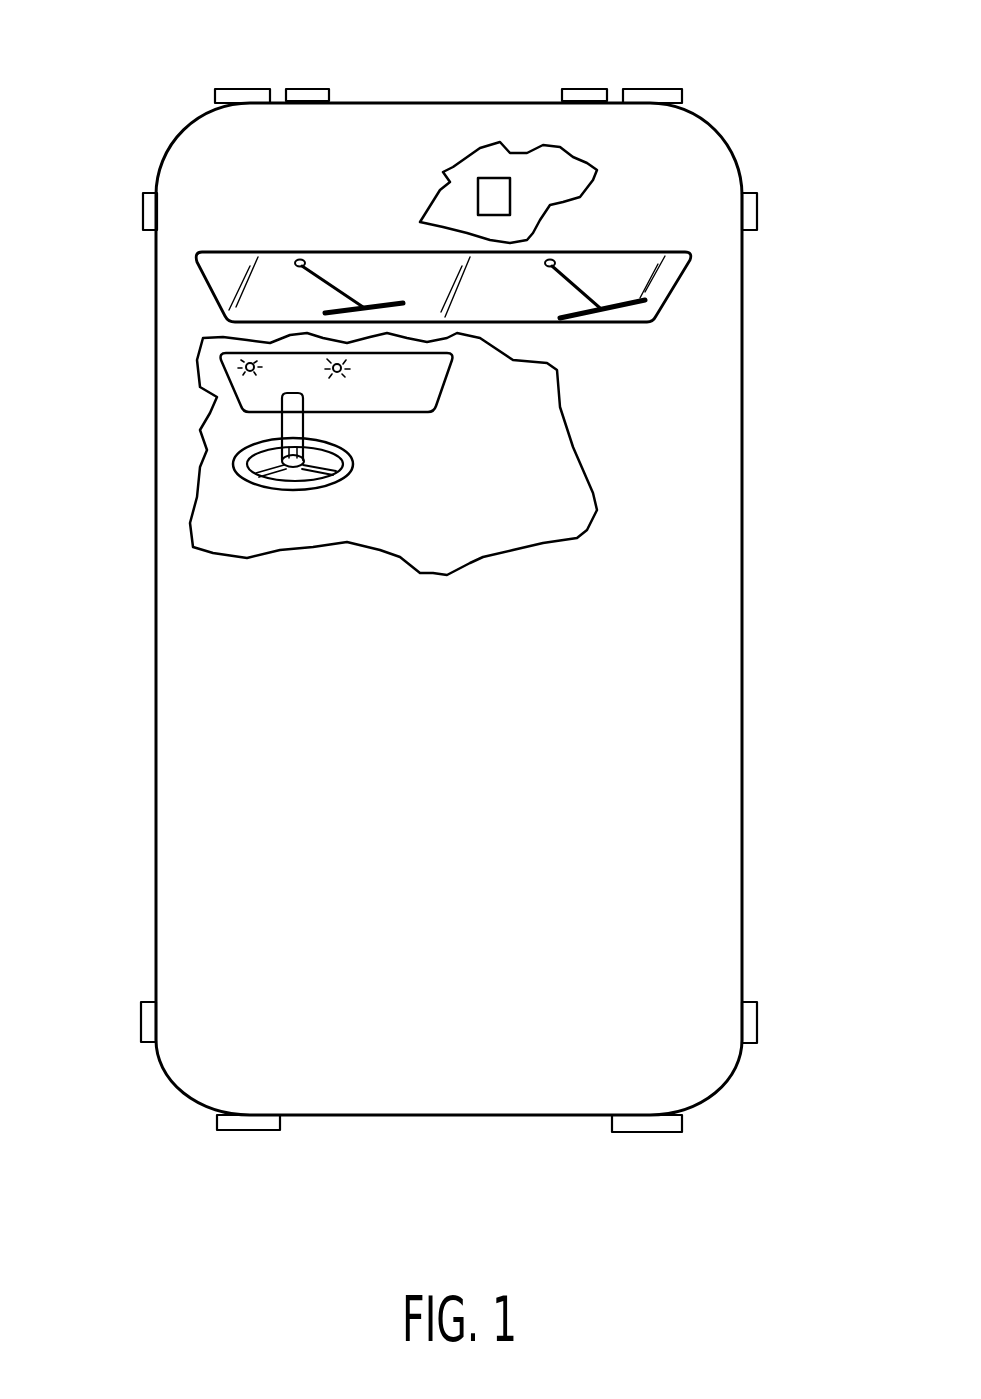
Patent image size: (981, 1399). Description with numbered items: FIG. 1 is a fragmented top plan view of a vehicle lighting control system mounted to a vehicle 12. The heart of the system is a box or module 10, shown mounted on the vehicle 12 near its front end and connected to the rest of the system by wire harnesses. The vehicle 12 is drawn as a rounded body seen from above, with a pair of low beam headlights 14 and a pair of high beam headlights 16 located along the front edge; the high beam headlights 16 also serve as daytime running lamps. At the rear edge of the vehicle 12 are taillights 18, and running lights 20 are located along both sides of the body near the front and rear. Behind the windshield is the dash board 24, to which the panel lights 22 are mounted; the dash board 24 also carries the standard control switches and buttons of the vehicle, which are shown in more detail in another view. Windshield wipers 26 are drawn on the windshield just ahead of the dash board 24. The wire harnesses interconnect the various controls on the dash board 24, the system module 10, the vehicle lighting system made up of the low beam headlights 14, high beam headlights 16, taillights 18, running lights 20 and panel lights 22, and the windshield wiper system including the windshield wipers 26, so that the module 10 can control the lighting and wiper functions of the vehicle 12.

The module 10 is at (490, 180).
The vehicle 12 is at (705, 629).
The low beam headlights 14 is at (241, 89).
The high beam headlights 16 is at (305, 89).
The taillights 18 is at (248, 1122).
The running lights 20 is at (143, 207).
The panel lights 22 is at (341, 373).
The dash board 24 is at (430, 386).
The windshield wipers 26 is at (327, 280).